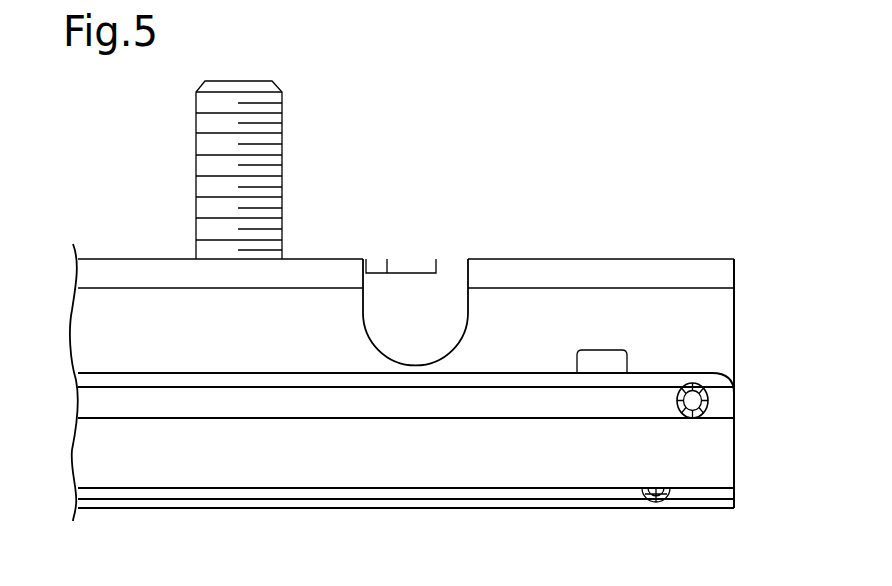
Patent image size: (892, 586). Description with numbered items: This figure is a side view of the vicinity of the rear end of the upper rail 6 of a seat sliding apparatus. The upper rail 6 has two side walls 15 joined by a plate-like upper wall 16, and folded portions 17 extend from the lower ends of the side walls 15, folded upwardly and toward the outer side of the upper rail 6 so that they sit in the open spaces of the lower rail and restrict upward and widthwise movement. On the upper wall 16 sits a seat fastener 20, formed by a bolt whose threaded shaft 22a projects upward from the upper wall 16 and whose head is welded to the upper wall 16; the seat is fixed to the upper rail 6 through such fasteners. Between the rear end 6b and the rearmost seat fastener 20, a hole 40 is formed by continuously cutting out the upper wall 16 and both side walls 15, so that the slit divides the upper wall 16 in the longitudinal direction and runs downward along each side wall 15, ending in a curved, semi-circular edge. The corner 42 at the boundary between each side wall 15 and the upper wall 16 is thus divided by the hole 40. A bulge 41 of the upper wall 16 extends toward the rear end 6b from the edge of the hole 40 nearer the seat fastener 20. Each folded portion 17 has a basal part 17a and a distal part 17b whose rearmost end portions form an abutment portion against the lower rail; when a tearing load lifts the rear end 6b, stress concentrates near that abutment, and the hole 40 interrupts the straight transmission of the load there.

The upper rail 6 is at (722, 87).
The rear end 6b is at (736, 346).
The side wall 15 is at (540, 355).
The upper wall 16 is at (640, 259).
The folded portion 17 is at (725, 449).
The basal part 17a is at (736, 510).
The distal part 17b is at (715, 372).
The seat fastener 20 is at (282, 92).
The threaded shaft 22a is at (208, 168).
The hole 40 is at (413, 361).
The bulge 41 is at (410, 265).
The corner 42 is at (559, 272).